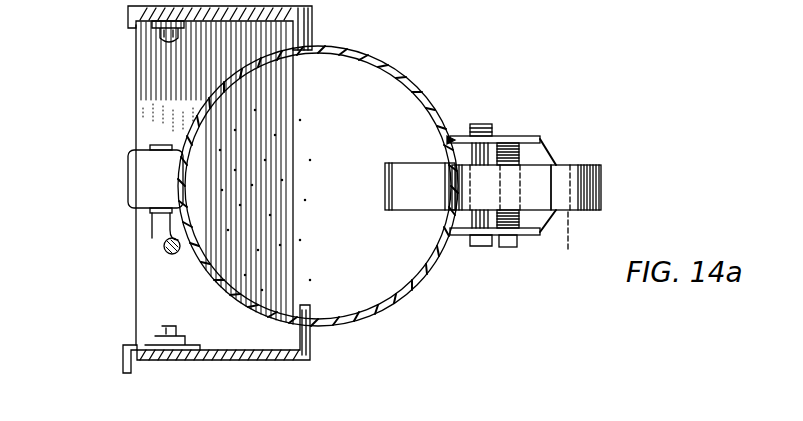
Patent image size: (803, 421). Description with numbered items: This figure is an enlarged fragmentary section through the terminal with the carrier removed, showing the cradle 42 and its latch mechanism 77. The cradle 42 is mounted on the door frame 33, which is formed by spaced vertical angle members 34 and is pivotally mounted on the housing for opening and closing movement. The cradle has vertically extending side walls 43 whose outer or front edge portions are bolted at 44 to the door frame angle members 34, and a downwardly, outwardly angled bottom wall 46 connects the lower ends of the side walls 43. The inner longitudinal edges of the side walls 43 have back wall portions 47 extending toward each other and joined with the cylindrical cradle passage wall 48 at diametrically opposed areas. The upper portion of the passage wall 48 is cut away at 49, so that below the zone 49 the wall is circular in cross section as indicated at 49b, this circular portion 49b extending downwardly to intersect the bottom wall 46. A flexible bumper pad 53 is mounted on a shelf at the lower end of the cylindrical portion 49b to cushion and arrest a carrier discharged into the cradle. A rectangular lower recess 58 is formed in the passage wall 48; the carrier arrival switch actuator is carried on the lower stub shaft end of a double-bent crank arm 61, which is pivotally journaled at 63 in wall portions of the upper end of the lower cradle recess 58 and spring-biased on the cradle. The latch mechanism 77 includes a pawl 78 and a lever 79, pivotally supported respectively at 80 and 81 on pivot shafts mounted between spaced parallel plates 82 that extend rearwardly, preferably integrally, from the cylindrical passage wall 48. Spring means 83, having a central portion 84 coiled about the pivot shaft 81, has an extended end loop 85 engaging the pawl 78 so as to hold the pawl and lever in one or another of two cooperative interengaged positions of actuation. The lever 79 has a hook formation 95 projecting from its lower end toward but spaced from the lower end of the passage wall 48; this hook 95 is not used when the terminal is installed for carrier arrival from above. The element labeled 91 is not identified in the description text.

The door frame 33 is at (124, 358).
The vertical angle members 34 is at (128, 8).
The cradle 42 is at (338, 42).
The side walls 43 is at (220, 362).
The bolts 44 is at (165, 36).
The bottom wall 46 is at (165, 118).
The back wall portions 47 is at (304, 340).
The cylindrical cradle passage wall 48 is at (428, 284).
The cut-away zone 49 is at (393, 298).
The circular cradle passage wall portion 49b is at (363, 108).
The flexible bumper pad 53 is at (260, 247).
The lower cradle recess 58 is at (145, 180).
The double-bent crank arm 61 is at (162, 244).
The pivot journal 63 is at (150, 217).
The latch mechanism 77 is at (528, 268).
The pawl 78 is at (542, 197).
The lever 79 is at (570, 243).
The pawl pivot 80 is at (485, 124).
The lever pivot shaft 81 is at (510, 248).
The spaced parallel plates 82 is at (541, 140).
The spring means 83 is at (548, 153).
The central coiled portion 84 is at (507, 146).
The extended end loop 85 is at (576, 180).
The shaft end 91 is at (600, 172).
The hook formation 95 is at (415, 190).